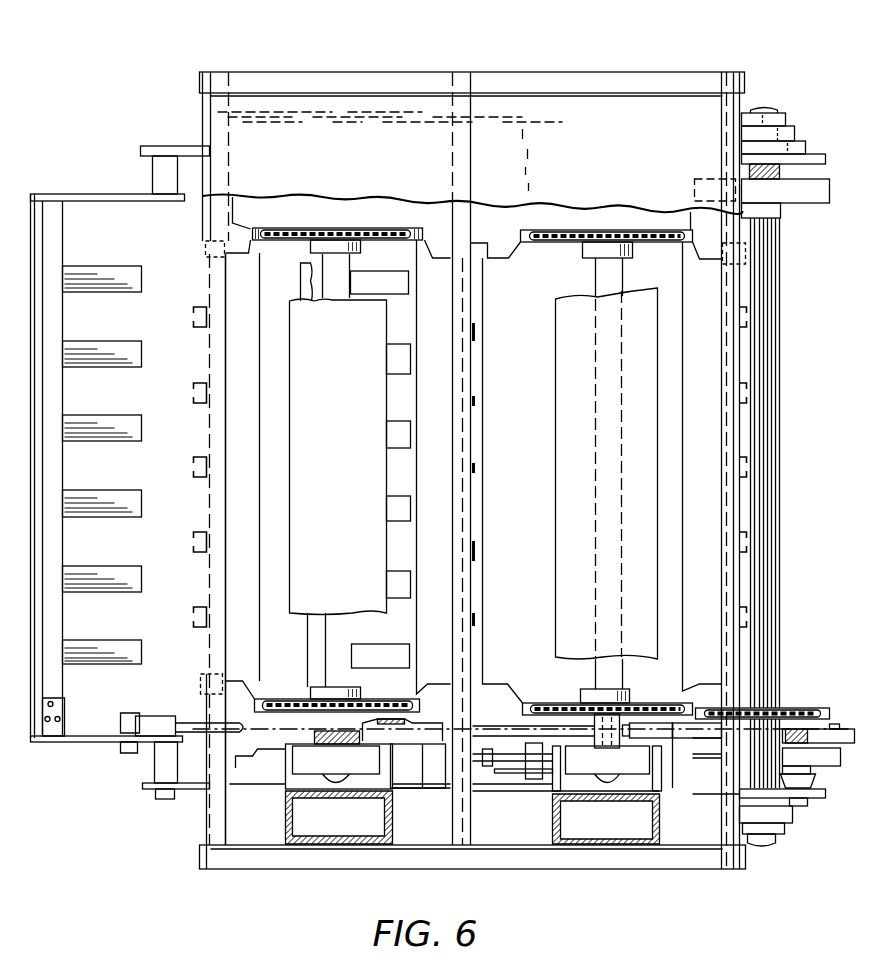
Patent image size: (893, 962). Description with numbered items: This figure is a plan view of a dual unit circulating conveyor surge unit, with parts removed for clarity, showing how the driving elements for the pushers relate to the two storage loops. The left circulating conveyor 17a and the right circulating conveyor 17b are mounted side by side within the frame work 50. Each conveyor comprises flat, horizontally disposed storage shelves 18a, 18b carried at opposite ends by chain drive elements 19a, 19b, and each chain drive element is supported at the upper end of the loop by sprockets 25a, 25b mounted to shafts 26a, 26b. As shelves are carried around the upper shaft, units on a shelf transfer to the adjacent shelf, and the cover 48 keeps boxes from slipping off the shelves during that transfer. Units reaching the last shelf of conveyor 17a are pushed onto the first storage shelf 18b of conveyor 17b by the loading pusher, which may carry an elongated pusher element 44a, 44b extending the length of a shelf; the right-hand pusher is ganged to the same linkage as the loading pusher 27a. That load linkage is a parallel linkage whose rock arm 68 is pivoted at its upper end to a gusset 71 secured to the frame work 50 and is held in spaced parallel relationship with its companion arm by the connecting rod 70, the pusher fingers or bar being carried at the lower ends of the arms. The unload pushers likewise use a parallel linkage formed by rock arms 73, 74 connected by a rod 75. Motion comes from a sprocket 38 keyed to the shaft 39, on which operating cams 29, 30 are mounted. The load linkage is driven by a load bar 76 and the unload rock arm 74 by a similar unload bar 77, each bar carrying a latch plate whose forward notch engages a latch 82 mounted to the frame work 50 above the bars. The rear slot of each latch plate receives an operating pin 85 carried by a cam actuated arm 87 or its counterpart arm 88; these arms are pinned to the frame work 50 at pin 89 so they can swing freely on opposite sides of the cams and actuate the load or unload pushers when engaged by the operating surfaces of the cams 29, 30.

The frame work 50 is at (608, 77).
The cover 48 is at (627, 156).
The operating cam 30 is at (827, 187).
The shaft 39 is at (778, 458).
The sprocket 38 is at (790, 707).
The operating pin 85 is at (832, 724).
The cam actuated arm 87 is at (838, 750).
The operating cam 29 is at (821, 766).
The cam actuated arm 88 is at (815, 774).
The pin 89 is at (803, 806).
The gusset 71 is at (176, 145).
The rock arm 68 is at (111, 193).
The loading pusher 27a is at (28, 230).
The elongated pusher element 44a is at (136, 341).
The chain drive element 19a is at (231, 196).
The chain drive element 19b is at (686, 229).
The sprocket 25a is at (293, 228).
The sprocket 25b is at (556, 231).
The shaft 26a is at (340, 214).
The shaft 26b is at (606, 222).
The circulating conveyor 17a is at (275, 275).
The circulating conveyor 17b is at (560, 275).
The storage shelf 18a is at (245, 406).
The storage shelf 18b is at (695, 363).
The elongated pusher element 44b is at (395, 343).
The connecting rod 70 is at (180, 727).
The rock arm 73 is at (256, 768).
The rock arm 74 is at (540, 797).
The rod 75 is at (512, 783).
The load bar 76 is at (479, 730).
The unload bar 77 is at (670, 788).
The latch 82 is at (484, 817).